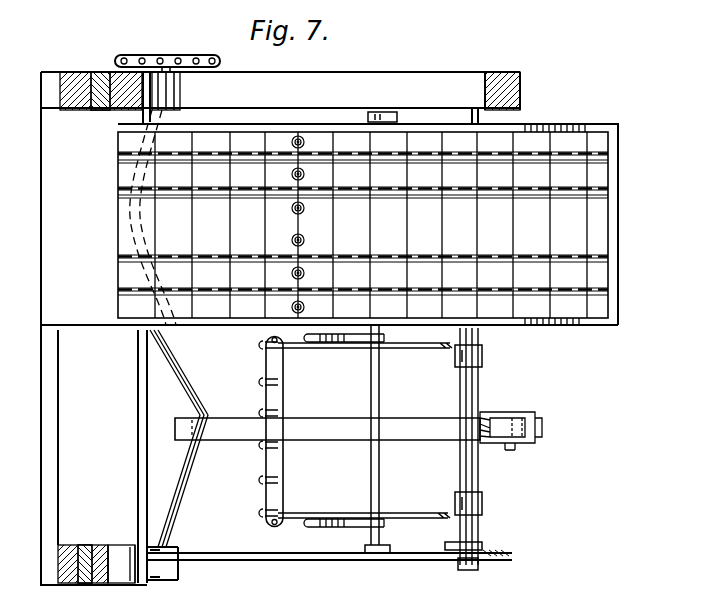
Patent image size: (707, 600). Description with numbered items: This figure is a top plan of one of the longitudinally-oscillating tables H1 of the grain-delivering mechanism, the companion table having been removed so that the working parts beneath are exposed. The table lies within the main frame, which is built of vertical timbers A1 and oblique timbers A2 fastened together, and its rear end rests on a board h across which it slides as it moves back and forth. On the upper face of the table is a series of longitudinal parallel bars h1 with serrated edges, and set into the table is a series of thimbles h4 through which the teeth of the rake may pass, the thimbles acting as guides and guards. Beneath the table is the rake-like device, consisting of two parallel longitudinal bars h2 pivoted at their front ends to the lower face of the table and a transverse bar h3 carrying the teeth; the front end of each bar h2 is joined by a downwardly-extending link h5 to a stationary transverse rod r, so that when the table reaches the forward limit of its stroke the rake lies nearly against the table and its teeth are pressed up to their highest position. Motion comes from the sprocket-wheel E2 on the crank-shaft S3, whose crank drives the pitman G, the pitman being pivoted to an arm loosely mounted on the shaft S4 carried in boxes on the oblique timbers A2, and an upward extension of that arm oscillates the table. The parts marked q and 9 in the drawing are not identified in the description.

The board h is at (329, 328).
The vertical timber A1 is at (118, 545).
The sprocket-wheel E2 is at (184, 55).
The oblique timber A2 is at (414, 572).
The longitudinally-oscillating table H1 is at (363, 224).
The longitudinal parallel bar h1 is at (197, 290).
The thimble h4 is at (342, 232).
The stud q is at (243, 530).
The transverse bar h3 is at (284, 397).
The longitudinal bar of rake h2 is at (355, 518).
The link h5 is at (352, 528).
The transverse rod r is at (382, 470).
The crank-shaft S3 is at (185, 386).
The pitman G is at (233, 442).
The gear box 9 is at (508, 452).
The shaft S4 is at (474, 540).